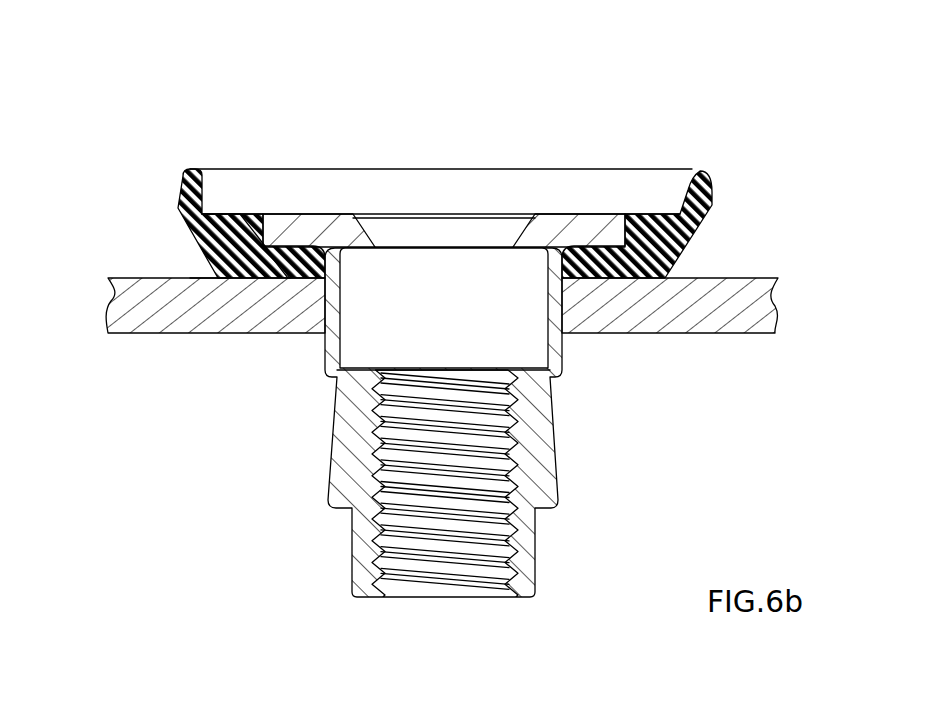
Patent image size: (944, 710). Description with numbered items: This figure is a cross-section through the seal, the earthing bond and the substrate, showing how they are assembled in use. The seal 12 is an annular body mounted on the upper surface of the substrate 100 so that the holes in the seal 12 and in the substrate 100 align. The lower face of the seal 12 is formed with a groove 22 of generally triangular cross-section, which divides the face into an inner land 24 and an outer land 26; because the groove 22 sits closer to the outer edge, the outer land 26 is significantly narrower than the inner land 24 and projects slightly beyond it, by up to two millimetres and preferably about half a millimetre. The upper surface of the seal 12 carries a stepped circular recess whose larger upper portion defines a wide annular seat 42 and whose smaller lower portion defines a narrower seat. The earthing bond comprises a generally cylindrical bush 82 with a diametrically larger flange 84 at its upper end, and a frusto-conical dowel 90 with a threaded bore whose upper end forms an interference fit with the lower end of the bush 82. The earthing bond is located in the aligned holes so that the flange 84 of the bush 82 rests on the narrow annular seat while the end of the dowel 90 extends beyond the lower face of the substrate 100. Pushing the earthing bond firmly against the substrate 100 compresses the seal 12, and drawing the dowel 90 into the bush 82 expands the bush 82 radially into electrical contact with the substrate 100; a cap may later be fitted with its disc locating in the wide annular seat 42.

The seal 12 is at (700, 186).
The groove 22 is at (252, 270).
The inner land 24 is at (269, 270).
The outer land 26 is at (205, 290).
The wide annular seat 42 is at (224, 216).
The bush 82 is at (568, 372).
The flange 84 is at (536, 228).
The dowel 90 is at (559, 489).
The substrate 100 is at (745, 279).